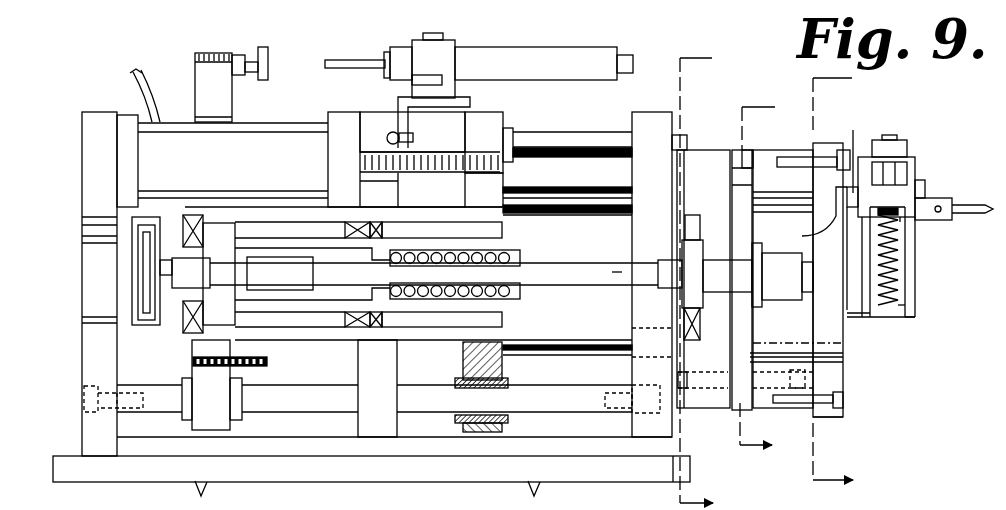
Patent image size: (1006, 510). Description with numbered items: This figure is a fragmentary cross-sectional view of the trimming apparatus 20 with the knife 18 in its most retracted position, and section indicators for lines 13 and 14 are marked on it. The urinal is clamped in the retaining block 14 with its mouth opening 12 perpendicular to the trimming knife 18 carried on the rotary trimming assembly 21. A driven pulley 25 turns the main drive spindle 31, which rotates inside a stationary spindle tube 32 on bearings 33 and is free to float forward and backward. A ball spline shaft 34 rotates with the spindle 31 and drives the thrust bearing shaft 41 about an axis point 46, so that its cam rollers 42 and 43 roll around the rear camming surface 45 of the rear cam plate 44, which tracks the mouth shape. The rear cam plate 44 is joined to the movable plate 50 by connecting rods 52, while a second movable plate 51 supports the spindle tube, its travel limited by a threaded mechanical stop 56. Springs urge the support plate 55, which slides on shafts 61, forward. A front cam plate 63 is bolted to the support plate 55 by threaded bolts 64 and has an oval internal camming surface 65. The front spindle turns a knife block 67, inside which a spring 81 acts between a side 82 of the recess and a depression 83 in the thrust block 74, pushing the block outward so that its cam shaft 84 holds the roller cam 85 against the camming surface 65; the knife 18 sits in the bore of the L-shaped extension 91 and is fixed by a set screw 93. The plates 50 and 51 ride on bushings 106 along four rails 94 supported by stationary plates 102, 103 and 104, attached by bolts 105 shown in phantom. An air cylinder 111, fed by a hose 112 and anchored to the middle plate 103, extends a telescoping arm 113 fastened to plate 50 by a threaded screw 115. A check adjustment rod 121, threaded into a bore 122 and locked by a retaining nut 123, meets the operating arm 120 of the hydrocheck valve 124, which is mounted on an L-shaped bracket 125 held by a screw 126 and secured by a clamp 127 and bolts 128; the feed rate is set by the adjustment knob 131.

The mouth opening 12 is at (698, 263).
The section line 13 is at (755, 274).
The retaining block 14 is at (816, 284).
The trimming knife 18 is at (972, 206).
The trimming apparatus 20 is at (514, 452).
The rotary trimming assembly 21 is at (846, 413).
The driven pulley 25 is at (135, 340).
The main drive spindle 31 is at (170, 240).
The spindle tube 32 is at (518, 296).
The bearings 33 is at (455, 290).
The ball spline shaft 34 is at (590, 270).
The thrust bearing shaft 41 is at (724, 280).
The cam roller 42 is at (675, 320).
The cam roller 43 is at (675, 228).
The rear cam plate 44 is at (707, 150).
The rear camming surface 45 is at (708, 215).
The axis point 46 is at (617, 273).
The movable plate 50 is at (492, 112).
The movable plate 51 is at (200, 345).
The connecting rods 52 is at (593, 185).
The support plate 55 is at (775, 405).
The threaded mechanical stop 56 is at (258, 362).
The shafts 61 is at (748, 163).
The front cam plate 63 is at (835, 380).
The threaded bolts 64 is at (800, 150).
The internal camming surface 65 is at (840, 355).
The knife block 67 is at (912, 316).
The thrust block 74 is at (905, 192).
The spring 81 is at (900, 273).
The side 82 is at (910, 300).
The depression 83 is at (900, 218).
The cam shaft 84 is at (854, 213).
The roller cam 85 is at (810, 216).
The L-shaped extension 91 is at (932, 198).
The set screw 93 is at (938, 212).
The rails 94 is at (602, 137).
The stationary plate 102 is at (82, 360).
The middle stationary plate 103 is at (363, 370).
The stationary plate 104 is at (658, 118).
The bolts 105 is at (84, 410).
The bushings 106 is at (513, 127).
The air cylinder 111 is at (266, 140).
The hose 112 is at (137, 83).
The telescoping arm 113 is at (443, 170).
The threaded screw 115 is at (484, 190).
The operating arm 120 is at (350, 58).
The check adjustment rod 121 is at (264, 79).
The threaded bore 122 is at (208, 67).
The retaining nut 123 is at (241, 54).
The hydrocheck valve 124 is at (552, 53).
The L-shaped bracket 125 is at (474, 94).
The screw 126 is at (410, 143).
The clamp 127 is at (420, 53).
The bolts 128 is at (445, 34).
The adjustment knob 131 is at (628, 55).